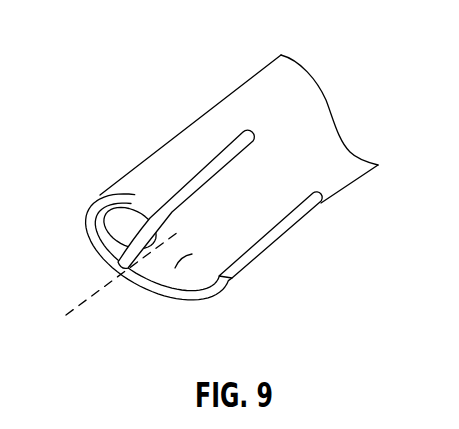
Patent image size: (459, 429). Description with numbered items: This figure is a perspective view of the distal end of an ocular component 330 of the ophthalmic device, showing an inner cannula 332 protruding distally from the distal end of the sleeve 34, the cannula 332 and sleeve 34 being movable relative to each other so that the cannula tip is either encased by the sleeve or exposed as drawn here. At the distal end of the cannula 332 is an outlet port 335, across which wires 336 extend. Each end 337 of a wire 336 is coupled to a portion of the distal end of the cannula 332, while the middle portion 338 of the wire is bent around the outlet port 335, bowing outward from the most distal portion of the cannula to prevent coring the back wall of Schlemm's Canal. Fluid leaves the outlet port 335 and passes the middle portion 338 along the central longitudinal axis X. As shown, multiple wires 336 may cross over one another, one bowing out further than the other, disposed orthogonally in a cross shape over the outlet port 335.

The ocular component 330 is at (337, 48).
The sleeve 34 is at (342, 135).
The cannula 332 is at (347, 174).
The outlet port 335 is at (190, 262).
The wire 336 is at (187, 187).
The end of the wire 337 is at (242, 133).
The middle portion of the wire 338 is at (108, 247).